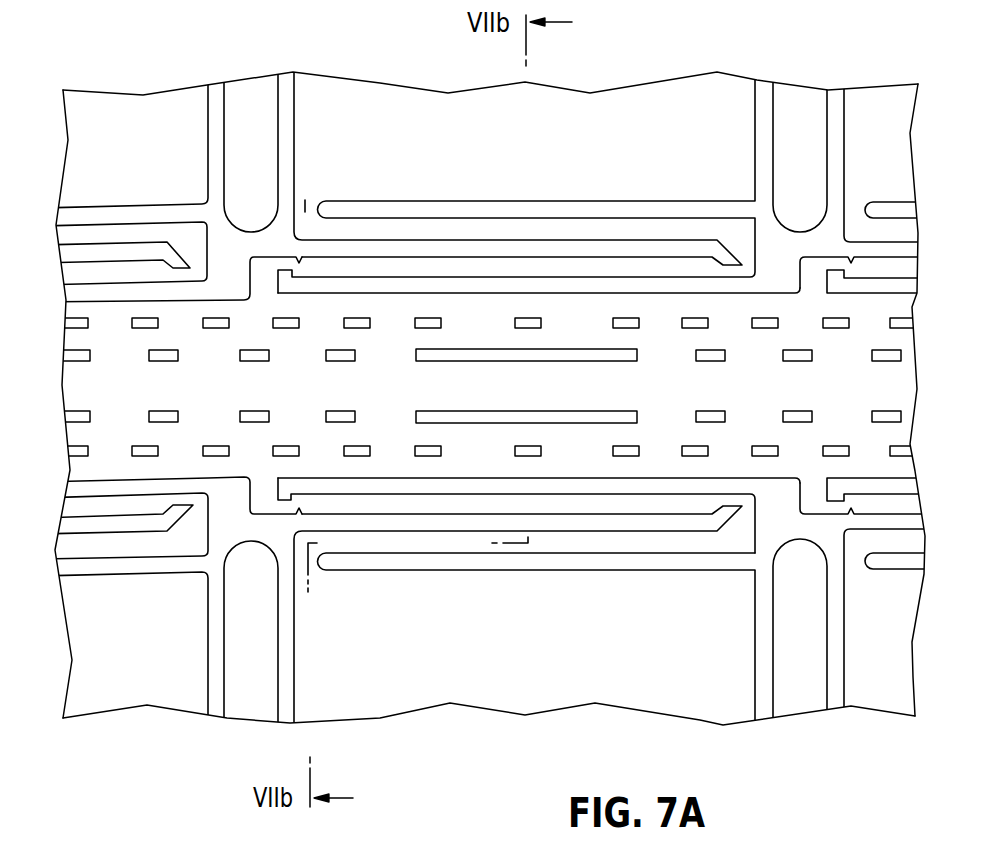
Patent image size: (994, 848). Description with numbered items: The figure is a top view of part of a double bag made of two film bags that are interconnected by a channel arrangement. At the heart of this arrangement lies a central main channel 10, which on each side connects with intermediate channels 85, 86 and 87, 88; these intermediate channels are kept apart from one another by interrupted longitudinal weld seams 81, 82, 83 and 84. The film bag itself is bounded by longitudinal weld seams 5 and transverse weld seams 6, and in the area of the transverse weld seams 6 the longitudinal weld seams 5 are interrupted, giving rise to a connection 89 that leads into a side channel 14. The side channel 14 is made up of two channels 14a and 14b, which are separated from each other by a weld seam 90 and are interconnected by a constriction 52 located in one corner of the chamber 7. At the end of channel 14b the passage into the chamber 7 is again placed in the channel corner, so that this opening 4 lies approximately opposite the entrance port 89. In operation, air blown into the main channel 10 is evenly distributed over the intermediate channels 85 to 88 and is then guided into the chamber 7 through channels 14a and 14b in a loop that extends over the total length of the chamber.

The opening 4 is at (305, 210).
The longitudinal weld seam 5 is at (343, 290).
The transverse weld seam 6 is at (215, 654).
The chamber 7 is at (451, 690).
The central main channel 10 is at (515, 379).
The side channel 14 is at (516, 619).
The channel 14a is at (450, 503).
The channel 14b is at (655, 545).
The constriction 52 is at (752, 268).
The interrupted longitudinal weld seam 81 is at (495, 417).
The interrupted longitudinal weld seam 82 is at (423, 447).
The interrupted longitudinal weld seam 83 is at (507, 353).
The interrupted longitudinal weld seam 84 is at (533, 317).
The intermediate channel 85 is at (701, 430).
The intermediate channel 86 is at (489, 542).
The intermediate channel 87 is at (489, 233).
The intermediate channel 88 is at (626, 308).
The connection 89 is at (268, 493).
The weld seam 90 is at (615, 525).